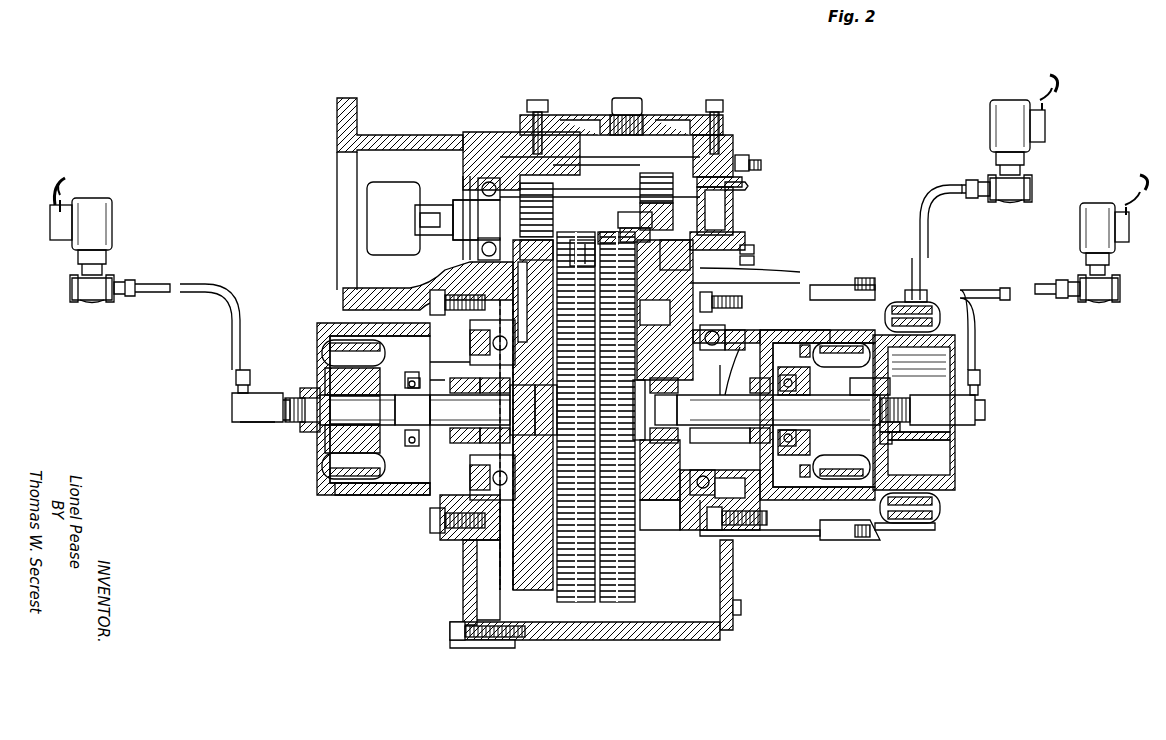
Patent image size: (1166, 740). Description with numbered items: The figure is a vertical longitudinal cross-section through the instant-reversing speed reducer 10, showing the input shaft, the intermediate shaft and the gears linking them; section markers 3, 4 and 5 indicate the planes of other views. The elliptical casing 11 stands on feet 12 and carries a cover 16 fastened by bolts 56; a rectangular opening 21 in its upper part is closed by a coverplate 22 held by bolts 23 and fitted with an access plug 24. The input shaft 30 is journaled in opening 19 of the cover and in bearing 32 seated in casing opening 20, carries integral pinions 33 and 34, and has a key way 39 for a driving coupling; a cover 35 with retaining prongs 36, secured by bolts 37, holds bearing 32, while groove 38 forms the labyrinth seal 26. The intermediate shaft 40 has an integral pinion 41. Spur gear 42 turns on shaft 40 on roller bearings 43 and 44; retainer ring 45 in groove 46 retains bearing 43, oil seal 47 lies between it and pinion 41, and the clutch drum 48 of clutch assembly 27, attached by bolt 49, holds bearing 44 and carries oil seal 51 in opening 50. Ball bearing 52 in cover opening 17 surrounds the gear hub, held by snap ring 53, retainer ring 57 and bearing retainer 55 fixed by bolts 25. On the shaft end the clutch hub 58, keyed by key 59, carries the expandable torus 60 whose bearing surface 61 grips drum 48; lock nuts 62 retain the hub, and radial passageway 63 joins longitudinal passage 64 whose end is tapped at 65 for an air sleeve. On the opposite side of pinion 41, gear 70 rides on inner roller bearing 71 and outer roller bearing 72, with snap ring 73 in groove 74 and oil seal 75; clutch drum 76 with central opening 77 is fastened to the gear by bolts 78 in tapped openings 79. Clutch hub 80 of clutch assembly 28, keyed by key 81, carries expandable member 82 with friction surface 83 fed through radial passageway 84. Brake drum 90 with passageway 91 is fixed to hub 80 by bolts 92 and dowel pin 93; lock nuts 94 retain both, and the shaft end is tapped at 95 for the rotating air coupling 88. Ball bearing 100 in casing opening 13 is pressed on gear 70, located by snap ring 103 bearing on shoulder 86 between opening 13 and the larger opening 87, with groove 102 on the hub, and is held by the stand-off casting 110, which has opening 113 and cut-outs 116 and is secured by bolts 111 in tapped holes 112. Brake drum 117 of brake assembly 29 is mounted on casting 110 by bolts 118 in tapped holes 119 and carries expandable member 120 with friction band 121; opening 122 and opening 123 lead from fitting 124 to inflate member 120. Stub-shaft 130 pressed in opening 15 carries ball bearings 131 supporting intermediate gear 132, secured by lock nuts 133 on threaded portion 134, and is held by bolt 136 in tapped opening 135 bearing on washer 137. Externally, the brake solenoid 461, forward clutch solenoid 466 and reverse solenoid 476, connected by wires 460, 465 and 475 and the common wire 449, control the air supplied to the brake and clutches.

The section line 3- 3 is at (1025, 427).
The section line 4- 4 is at (638, 690).
The section line 5- 5 is at (516, 690).
The instant-reversing speed reducer 10 is at (389, 138).
The casing 11 is at (732, 580).
The feet 12 is at (728, 640).
The circular opening 13 is at (692, 500).
The circular opening 15 is at (738, 240).
The cover 16 is at (468, 588).
The circular opening 17 is at (490, 330).
The circular opening 19 is at (478, 180).
The circular opening 20 is at (702, 179).
The rectangular opening 21 is at (696, 152).
The coverplate 22 is at (674, 118).
The bolts 23 is at (723, 106).
The access plug 24 is at (626, 101).
The bolts 25 is at (431, 522).
The labyrinth seal 26 is at (463, 198).
The clutch assembly 27 is at (312, 497).
The clutch assembly 28 is at (841, 503).
The brake assembly 29 is at (935, 533).
The input shaft 30 is at (592, 197).
The bearing 32 is at (715, 211).
The pinion 33 is at (533, 184).
The pinion 34 is at (656, 178).
The cover 35 is at (742, 157).
The ball bearing retaining prongs 36 is at (745, 186).
The bolts 37 is at (757, 165).
The circular groove 38 is at (466, 182).
The key way 39 is at (415, 218).
The intermediate shaft 40 is at (478, 440).
The integral pinion 41 is at (648, 410).
The spur gear 42 is at (528, 592).
The roller bearing 43 is at (495, 385).
The roller bearing 44 is at (465, 385).
The retainer ring 45 is at (522, 410).
The circular groove 46 is at (497, 437).
The oil seal 47 is at (546, 410).
The clutch drum 48 is at (358, 498).
The bolt 49 is at (406, 445).
The circular opening 50 is at (408, 385).
The oil seal 51 is at (412, 410).
The ball bearing 52 is at (507, 476).
The snap ring 53 is at (470, 410).
The bearing retainer 55 is at (450, 508).
The bolts 56 is at (450, 632).
The retainer ring 57 is at (514, 493).
The clutch hub 58 is at (330, 440).
The key 59 is at (383, 403).
The expandable member 60 is at (325, 478).
The bearing surface 61 is at (353, 466).
The lock nuts 62 is at (309, 390).
The radial passageway 63 is at (353, 353).
The longitudinal passage 64 is at (310, 428).
The internally tapped end 65 is at (303, 418).
The gear 70 is at (655, 505).
The inner roller bearing 71 is at (678, 387).
The outer roller bearing 72 is at (720, 439).
The snap ring 73 is at (674, 439).
The circular groove 74 is at (665, 310).
The oil seal 75 is at (700, 380).
The clutch drum 76 is at (866, 498).
The central circular opening 77 is at (769, 398).
The bolts 78 is at (806, 472).
The tapped openings 79 is at (752, 405).
The clutch hub 80 is at (783, 446).
The key 81 is at (769, 429).
The flexible expandable member 82 is at (796, 378).
The friction bearing surface 83 is at (841, 467).
The radial passageway 84 is at (700, 335).
The shoulder 86 is at (700, 322).
The circular opening 87 is at (760, 516).
The rotating air coupling 88 is at (980, 406).
The brake drum 90 is at (963, 493).
The circular passageway 91 is at (896, 447).
The bolts 92 is at (894, 438).
The dowel pin 93 is at (888, 388).
The lock nuts 94 is at (902, 426).
The tapped end 95 is at (906, 400).
The ball bearing 100 is at (690, 486).
The external circular groove 102 is at (722, 371).
The snap ring 103 is at (752, 340).
The stand-off casting 110 is at (742, 284).
The bolts 111 is at (732, 537).
The tapped holes 112 is at (710, 532).
The circular opening 113 is at (798, 338).
The cut-outs 116 is at (825, 540).
The brake drum 117 is at (893, 530).
The bolts 118 is at (875, 283).
The tapped holes 119 is at (864, 275).
The expandable torus-like member 120 is at (940, 308).
The friction member 121 is at (935, 500).
The opening 122 is at (912, 290).
The opening 123 is at (912, 316).
The fitting 124 is at (922, 290).
The stub-shaft 130 is at (674, 240).
The ball bearings 131 is at (626, 230).
The intermediate gear 132 is at (620, 212).
The lock nuts 133 is at (604, 242).
The externally-threaded portion 134 is at (577, 262).
The tapped opening 135 is at (754, 250).
The bolt 136 is at (754, 261).
The washer 137 is at (778, 273).
The negative wire 449 is at (1146, 190).
The wire 460 is at (1138, 192).
The brake solenoid 461 is at (1074, 236).
The wire 465 is at (60, 178).
The forward clutch solenoid 466 is at (118, 225).
The wire 475 is at (1050, 92).
The reverse solenoid 476 is at (983, 127).